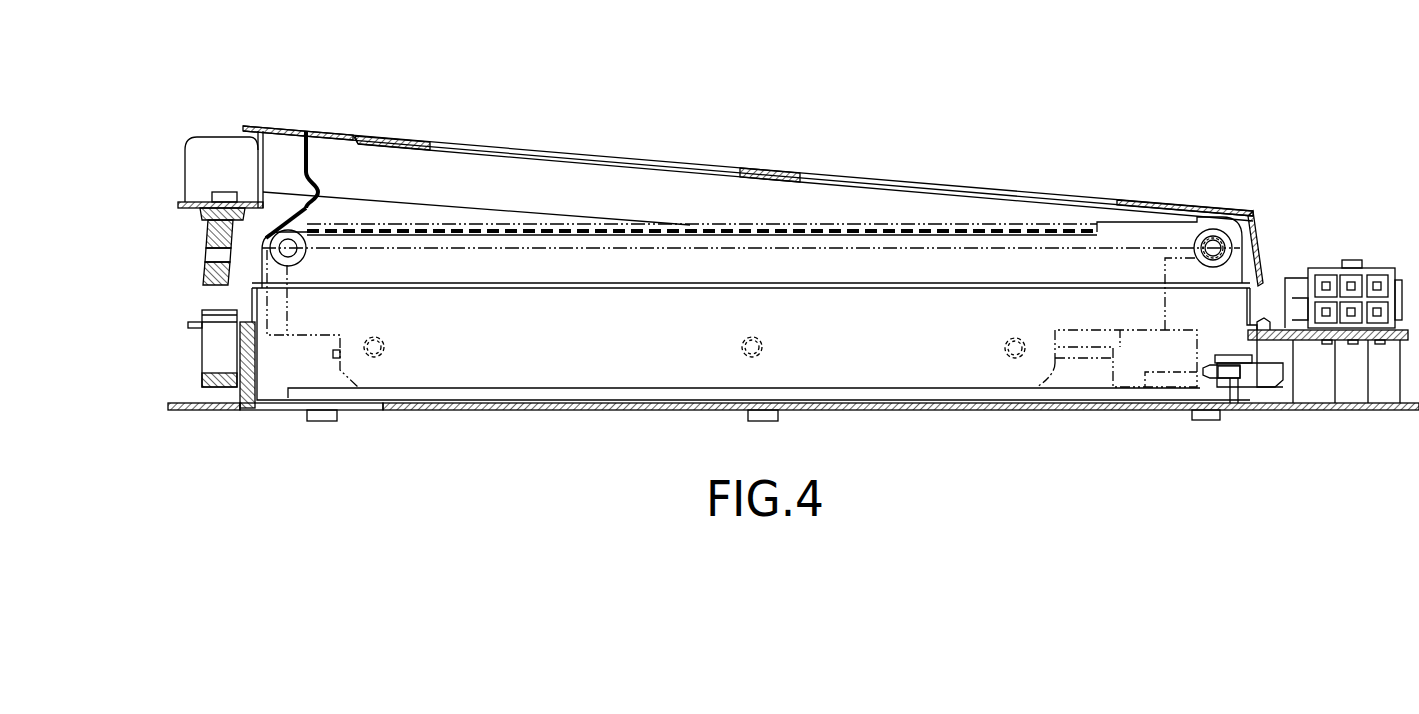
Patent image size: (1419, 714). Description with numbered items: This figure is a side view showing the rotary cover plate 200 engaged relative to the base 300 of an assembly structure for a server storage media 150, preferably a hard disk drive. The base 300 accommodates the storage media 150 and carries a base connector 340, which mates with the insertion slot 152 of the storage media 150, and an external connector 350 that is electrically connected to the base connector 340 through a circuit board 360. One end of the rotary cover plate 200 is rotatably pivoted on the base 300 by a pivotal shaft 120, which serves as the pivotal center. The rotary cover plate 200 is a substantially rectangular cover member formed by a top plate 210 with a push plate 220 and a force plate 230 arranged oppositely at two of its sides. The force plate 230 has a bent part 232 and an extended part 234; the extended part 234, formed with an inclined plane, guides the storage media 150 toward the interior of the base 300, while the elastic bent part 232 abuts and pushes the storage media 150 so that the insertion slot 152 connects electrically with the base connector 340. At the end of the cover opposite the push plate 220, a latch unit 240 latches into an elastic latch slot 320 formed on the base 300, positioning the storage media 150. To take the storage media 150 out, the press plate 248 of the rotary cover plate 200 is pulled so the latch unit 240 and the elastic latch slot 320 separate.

The pivotal shaft 120 is at (1213, 248).
The storage media 150 is at (533, 328).
The insertion slot 152 is at (1165, 358).
The rotary cover plate 200 is at (748, 146).
The top plate 210 is at (797, 176).
The push plate 220 is at (1262, 240).
The force plate 230 is at (347, 154).
The bent part 232 is at (318, 191).
The extended part 234 is at (296, 220).
The latch unit 240 is at (205, 272).
The press plate 248 is at (198, 200).
The base 300 is at (845, 410).
The elastic latch slot 320 is at (213, 345).
The base connector 340 is at (1232, 403).
The external connector 350 is at (1372, 275).
The circuit board 360 is at (1338, 343).